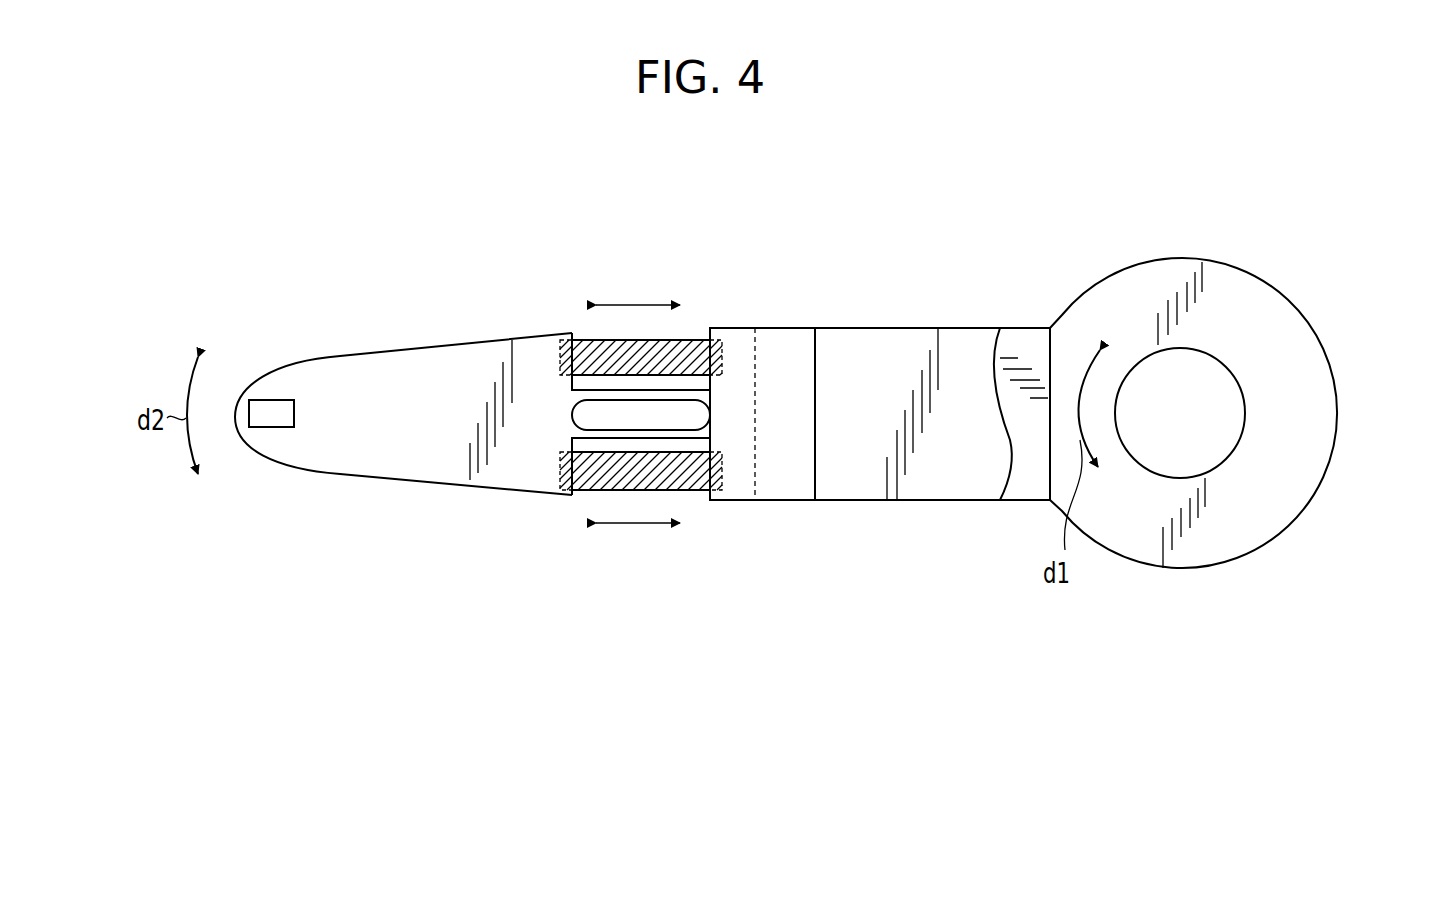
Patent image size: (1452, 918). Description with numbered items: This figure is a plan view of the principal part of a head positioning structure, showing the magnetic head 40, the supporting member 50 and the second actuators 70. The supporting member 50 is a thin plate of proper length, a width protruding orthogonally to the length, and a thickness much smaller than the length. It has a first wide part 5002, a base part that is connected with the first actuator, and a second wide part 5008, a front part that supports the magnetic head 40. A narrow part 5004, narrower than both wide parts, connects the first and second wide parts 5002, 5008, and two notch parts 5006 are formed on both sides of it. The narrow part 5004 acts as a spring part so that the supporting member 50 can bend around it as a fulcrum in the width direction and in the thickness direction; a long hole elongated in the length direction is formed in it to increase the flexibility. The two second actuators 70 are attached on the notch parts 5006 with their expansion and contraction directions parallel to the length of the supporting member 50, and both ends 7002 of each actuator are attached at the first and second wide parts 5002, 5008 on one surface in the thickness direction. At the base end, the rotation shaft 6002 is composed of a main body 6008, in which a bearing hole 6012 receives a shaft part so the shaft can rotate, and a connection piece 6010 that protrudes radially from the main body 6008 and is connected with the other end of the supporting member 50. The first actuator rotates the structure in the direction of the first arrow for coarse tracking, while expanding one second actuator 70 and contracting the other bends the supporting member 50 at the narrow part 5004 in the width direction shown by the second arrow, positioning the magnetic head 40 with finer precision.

The magnetic head 40 is at (276, 400).
The supporting member 50 is at (432, 490).
The second actuators 70 is at (590, 357).
The first wide part 5002 is at (785, 350).
The narrow part 5004 is at (600, 432).
The notch parts 5006 is at (693, 380).
The second wide part 5008 is at (392, 348).
The rotation shaft 6002 is at (1234, 256).
The main body 6008 is at (1127, 297).
The connection piece 6010 is at (960, 360).
The bearing hole 6012 is at (1208, 360).
The ends 7002 is at (560, 335).